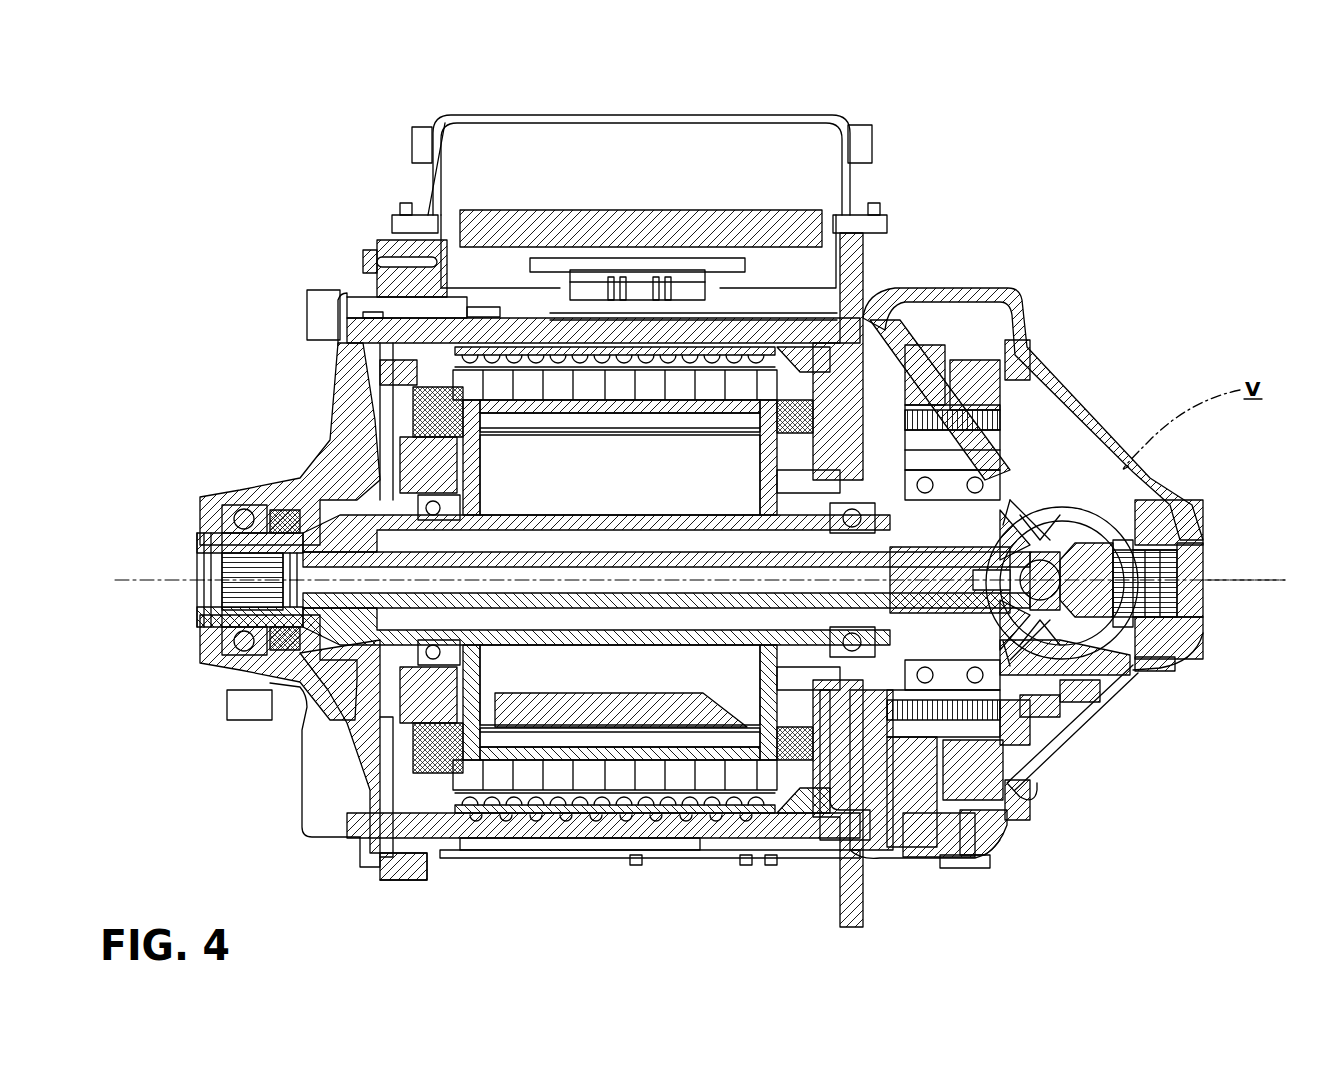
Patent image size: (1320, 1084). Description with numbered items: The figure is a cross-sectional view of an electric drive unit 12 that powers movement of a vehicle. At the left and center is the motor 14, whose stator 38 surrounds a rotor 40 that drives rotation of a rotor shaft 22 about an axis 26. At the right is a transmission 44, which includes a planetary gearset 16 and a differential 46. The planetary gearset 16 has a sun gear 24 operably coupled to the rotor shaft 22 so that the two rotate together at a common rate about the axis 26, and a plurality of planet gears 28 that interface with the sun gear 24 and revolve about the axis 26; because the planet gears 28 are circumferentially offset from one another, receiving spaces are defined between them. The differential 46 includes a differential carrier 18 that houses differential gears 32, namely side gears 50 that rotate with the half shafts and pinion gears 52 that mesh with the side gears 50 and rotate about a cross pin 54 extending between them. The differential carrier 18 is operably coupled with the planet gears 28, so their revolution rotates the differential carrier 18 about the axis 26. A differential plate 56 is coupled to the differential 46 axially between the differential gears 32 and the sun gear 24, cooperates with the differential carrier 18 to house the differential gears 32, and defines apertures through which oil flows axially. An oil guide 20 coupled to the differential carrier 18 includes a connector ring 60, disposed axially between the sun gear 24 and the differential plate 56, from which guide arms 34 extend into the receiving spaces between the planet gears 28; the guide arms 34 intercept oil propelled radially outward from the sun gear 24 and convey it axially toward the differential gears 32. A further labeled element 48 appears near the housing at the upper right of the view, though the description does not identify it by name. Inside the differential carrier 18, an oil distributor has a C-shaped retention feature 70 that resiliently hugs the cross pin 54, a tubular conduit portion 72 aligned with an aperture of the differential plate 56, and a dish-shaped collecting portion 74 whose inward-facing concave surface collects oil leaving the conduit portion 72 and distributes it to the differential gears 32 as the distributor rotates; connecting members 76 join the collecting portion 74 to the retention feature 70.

The electric drive unit 12 is at (1002, 133).
The motor 14 is at (692, 465).
The planetary gearset 16 is at (940, 400).
The differential carrier 18 is at (1041, 527).
The oil guide 20 is at (925, 700).
The rotor shaft 22 is at (807, 760).
The sun gear 24 is at (827, 727).
The axis 26 is at (1233, 590).
The planet gears 28 is at (818, 400).
The differential gears 32 is at (1140, 668).
The guide arms 34 is at (1000, 697).
The stator 38 is at (617, 385).
The rotor 40 is at (592, 483).
The transmission 44 is at (1012, 500).
The differential 46 is at (1065, 545).
The end wall 48 is at (872, 330).
The side gears 50 is at (1030, 660).
The pinion gears 52 is at (1077, 655).
The cross pin 54 is at (1160, 560).
The differential plate 56 is at (995, 812).
The connector ring 60 is at (990, 385).
The retention feature 70 is at (1100, 515).
The conduit portion 72 is at (1007, 497).
The collecting portion 74 is at (1123, 687).
The connecting members 76 is at (1200, 640).